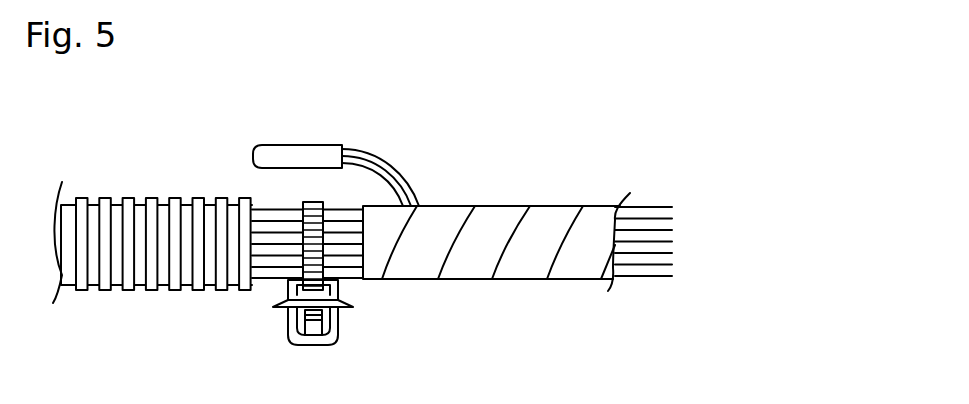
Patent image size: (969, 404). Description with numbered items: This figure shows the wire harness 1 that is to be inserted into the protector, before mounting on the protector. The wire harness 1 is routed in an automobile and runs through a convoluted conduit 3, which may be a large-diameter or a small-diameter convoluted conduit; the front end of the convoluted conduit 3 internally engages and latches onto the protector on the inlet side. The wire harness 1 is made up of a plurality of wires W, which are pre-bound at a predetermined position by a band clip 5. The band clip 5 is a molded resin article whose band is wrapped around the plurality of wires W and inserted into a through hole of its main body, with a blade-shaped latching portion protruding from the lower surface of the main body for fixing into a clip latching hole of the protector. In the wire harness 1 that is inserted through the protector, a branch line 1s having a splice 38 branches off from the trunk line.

The splice 38 is at (302, 152).
The branch line 1s is at (400, 170).
The band clip 5 is at (305, 258).
The convoluted conduit 3 is at (123, 290).
The wire harness 1 is at (470, 281).
The wires W is at (640, 281).